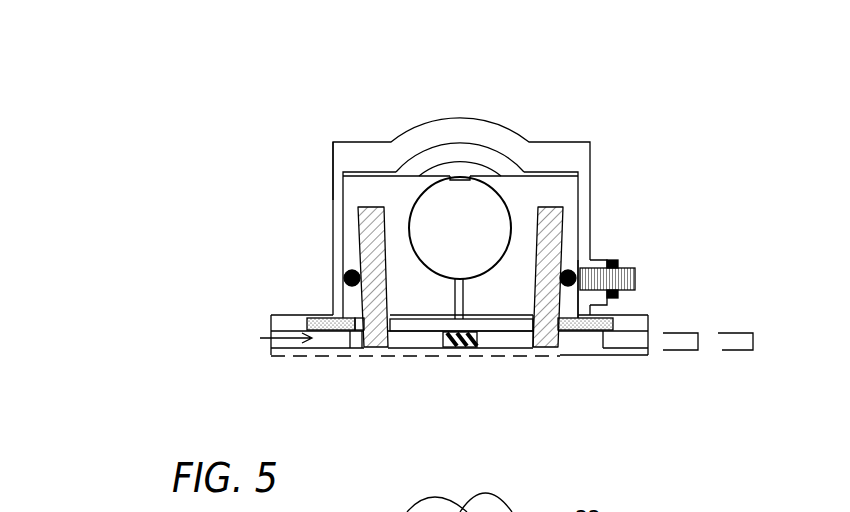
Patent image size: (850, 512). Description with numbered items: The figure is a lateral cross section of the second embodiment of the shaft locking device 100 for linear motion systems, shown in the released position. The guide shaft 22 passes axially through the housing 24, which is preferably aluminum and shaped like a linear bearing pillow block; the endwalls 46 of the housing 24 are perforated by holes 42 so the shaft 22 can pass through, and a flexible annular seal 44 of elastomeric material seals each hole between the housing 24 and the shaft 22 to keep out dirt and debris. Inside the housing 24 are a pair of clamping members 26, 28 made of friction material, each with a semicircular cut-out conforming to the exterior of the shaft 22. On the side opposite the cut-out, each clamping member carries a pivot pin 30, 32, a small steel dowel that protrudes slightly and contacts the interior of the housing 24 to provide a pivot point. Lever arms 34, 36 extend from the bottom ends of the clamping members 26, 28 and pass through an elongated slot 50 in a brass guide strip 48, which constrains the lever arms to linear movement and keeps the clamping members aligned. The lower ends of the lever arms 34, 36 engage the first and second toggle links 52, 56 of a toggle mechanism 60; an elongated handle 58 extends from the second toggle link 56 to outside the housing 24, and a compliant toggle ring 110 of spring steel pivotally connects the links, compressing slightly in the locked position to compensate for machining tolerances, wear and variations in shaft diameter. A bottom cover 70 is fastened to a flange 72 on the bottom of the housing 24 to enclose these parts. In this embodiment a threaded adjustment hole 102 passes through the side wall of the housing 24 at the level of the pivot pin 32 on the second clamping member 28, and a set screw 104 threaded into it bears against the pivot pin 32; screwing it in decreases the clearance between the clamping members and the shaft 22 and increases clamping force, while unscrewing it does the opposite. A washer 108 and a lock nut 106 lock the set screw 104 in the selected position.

The shaft locking device 100 is at (617, 148).
The guide shaft 22 is at (475, 200).
The housing 24 is at (590, 170).
The first clamping member 26 is at (373, 190).
The second clamping member 28 is at (548, 190).
The pivot pin 30 is at (343, 273).
The pivot pin 32 is at (573, 340).
The first lever arm 34 is at (380, 345).
The second lever arm 36 is at (545, 340).
The holes 42 is at (448, 163).
The flexible annular seal 44 is at (462, 168).
The endwalls 46 is at (430, 162).
The guide strip 48 is at (337, 331).
The elongated slot 50 is at (457, 307).
The first toggle link 52 is at (415, 343).
The second toggle link 56 is at (505, 345).
The elongated handle 58 is at (717, 342).
The toggle mechanism 60 is at (270, 338).
The bottom cover 70 is at (637, 360).
The flange 72 is at (297, 323).
The threaded adjustment hole 102 is at (593, 255).
The set screw 104 is at (637, 278).
The lock nut 106 is at (603, 303).
The washer 108 is at (607, 262).
The compliant toggle ring 110 is at (468, 353).